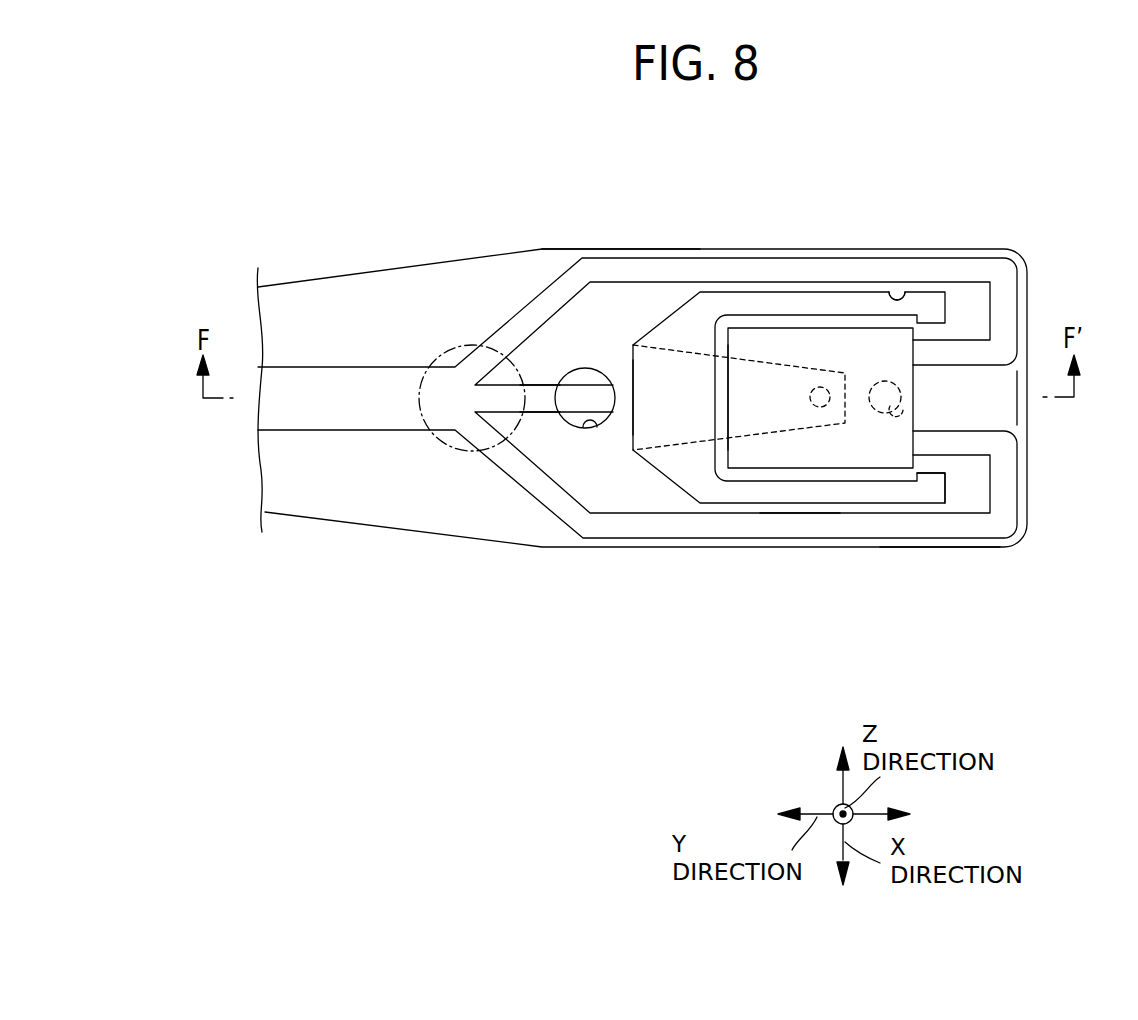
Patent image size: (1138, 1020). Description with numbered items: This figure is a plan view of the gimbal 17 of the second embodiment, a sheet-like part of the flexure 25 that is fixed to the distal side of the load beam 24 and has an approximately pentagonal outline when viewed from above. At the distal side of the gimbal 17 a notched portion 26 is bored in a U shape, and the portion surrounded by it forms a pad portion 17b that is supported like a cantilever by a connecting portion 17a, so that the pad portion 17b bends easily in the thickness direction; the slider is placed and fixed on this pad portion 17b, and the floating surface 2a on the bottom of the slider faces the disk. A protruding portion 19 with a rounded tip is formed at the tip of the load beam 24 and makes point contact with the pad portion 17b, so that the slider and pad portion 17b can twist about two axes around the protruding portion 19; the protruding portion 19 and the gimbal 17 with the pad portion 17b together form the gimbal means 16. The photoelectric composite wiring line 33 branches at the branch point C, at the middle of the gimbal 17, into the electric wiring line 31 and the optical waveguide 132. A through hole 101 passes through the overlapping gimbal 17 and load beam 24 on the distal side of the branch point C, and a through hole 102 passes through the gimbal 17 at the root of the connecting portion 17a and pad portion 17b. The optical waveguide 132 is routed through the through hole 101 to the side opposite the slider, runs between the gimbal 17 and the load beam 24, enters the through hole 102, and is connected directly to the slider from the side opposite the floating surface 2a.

The floating surface 2a is at (815, 347).
The gimbal means 16 is at (877, 482).
The gimbal 17 is at (423, 288).
The connecting portion 17a is at (992, 398).
The pad portion 17b is at (800, 473).
The protruding portion 19 is at (830, 397).
The load beam 24 is at (681, 368).
The flexure 25 is at (561, 248).
The notched portion 26 is at (905, 301).
The electric wiring line 31 is at (930, 523).
The photoelectric composite wiring line 33 is at (388, 402).
The through hole 101 is at (598, 425).
The through hole 102 is at (903, 413).
The optical waveguide 132 is at (533, 403).
The branch point C is at (467, 347).